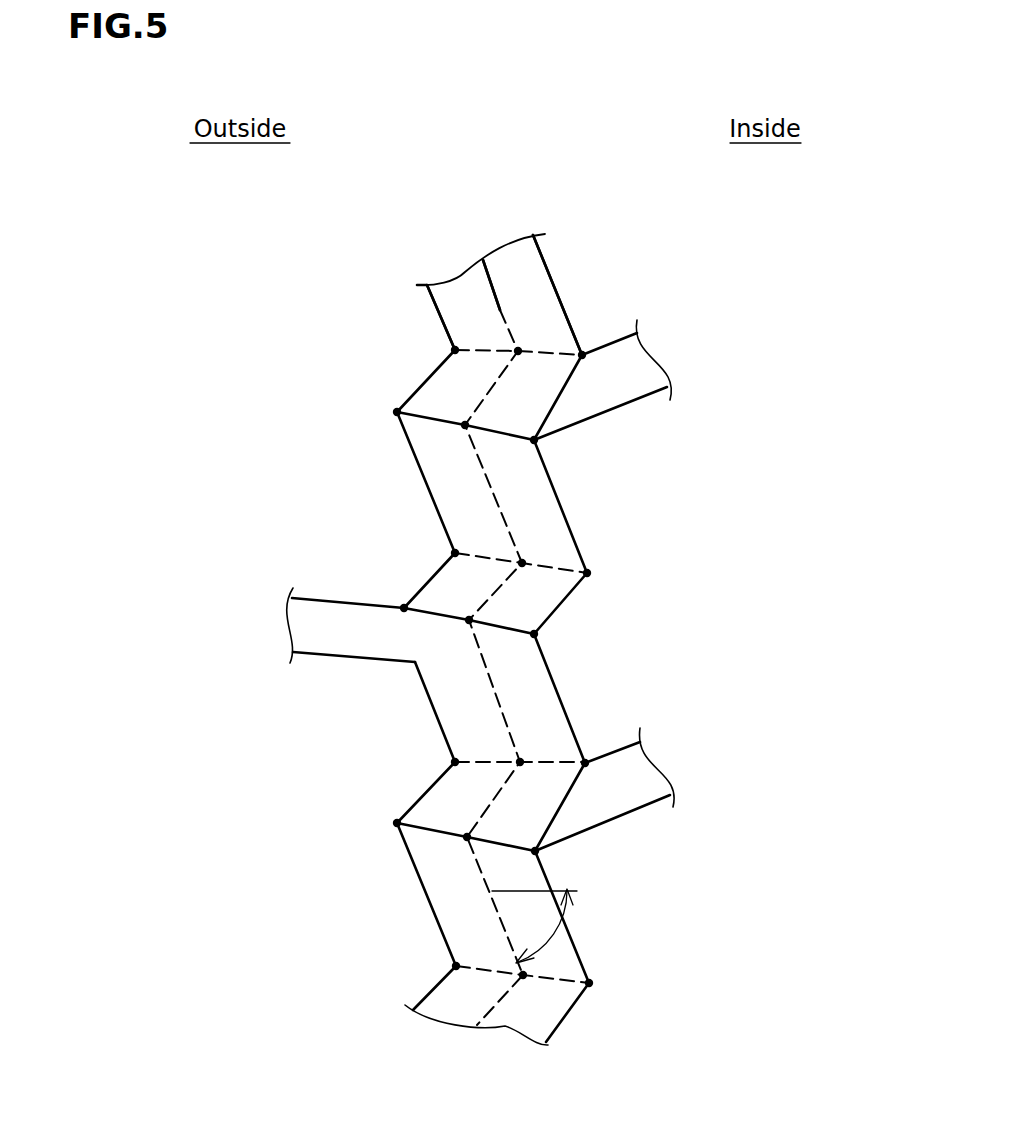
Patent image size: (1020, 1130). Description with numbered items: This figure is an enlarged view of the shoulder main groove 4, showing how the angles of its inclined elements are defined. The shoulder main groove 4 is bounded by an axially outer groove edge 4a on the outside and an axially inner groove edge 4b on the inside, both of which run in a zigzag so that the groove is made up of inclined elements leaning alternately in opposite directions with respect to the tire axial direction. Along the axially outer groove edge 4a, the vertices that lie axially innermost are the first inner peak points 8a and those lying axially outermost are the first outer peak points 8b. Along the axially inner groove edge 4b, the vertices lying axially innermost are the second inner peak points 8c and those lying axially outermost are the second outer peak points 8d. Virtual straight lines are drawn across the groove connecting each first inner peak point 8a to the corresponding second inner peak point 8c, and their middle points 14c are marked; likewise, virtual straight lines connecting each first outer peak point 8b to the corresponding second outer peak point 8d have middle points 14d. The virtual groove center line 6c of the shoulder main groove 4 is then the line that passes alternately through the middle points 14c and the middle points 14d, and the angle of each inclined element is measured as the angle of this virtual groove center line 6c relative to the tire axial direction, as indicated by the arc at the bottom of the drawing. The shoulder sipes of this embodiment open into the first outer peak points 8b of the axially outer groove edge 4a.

The shoulder main groove 4 is at (509, 265).
The axially outer groove edge 4a is at (438, 314).
The axially inner groove edge 4b is at (567, 317).
The virtual groove center line 6c is at (488, 284).
The first inner peak point 8a is at (455, 350).
The first outer peak point 8b is at (397, 412).
The second inner peak point 8c is at (582, 355).
The second outer peak point 8d is at (534, 440).
The middle point 14c is at (518, 351).
The middle point 14d is at (465, 425).